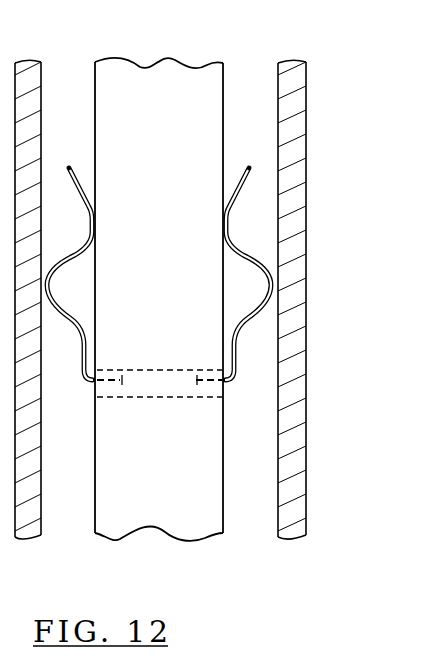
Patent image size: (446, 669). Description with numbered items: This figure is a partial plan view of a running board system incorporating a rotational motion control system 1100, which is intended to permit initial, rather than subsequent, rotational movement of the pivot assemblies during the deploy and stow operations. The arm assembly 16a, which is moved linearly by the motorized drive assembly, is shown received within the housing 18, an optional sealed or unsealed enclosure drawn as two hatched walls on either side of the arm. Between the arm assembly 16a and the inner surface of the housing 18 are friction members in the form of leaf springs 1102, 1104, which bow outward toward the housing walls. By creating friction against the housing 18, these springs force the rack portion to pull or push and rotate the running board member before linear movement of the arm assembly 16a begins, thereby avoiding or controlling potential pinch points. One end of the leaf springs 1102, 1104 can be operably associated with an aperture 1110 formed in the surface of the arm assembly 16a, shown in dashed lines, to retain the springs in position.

The arm assembly 16a is at (208, 83).
The housing 18 is at (306, 148).
The system for permitting initial rotational movement 1100 is at (217, 373).
The leaf spring 1102 is at (85, 381).
The leaf spring 1104 is at (256, 323).
The aperture 1110 is at (173, 390).